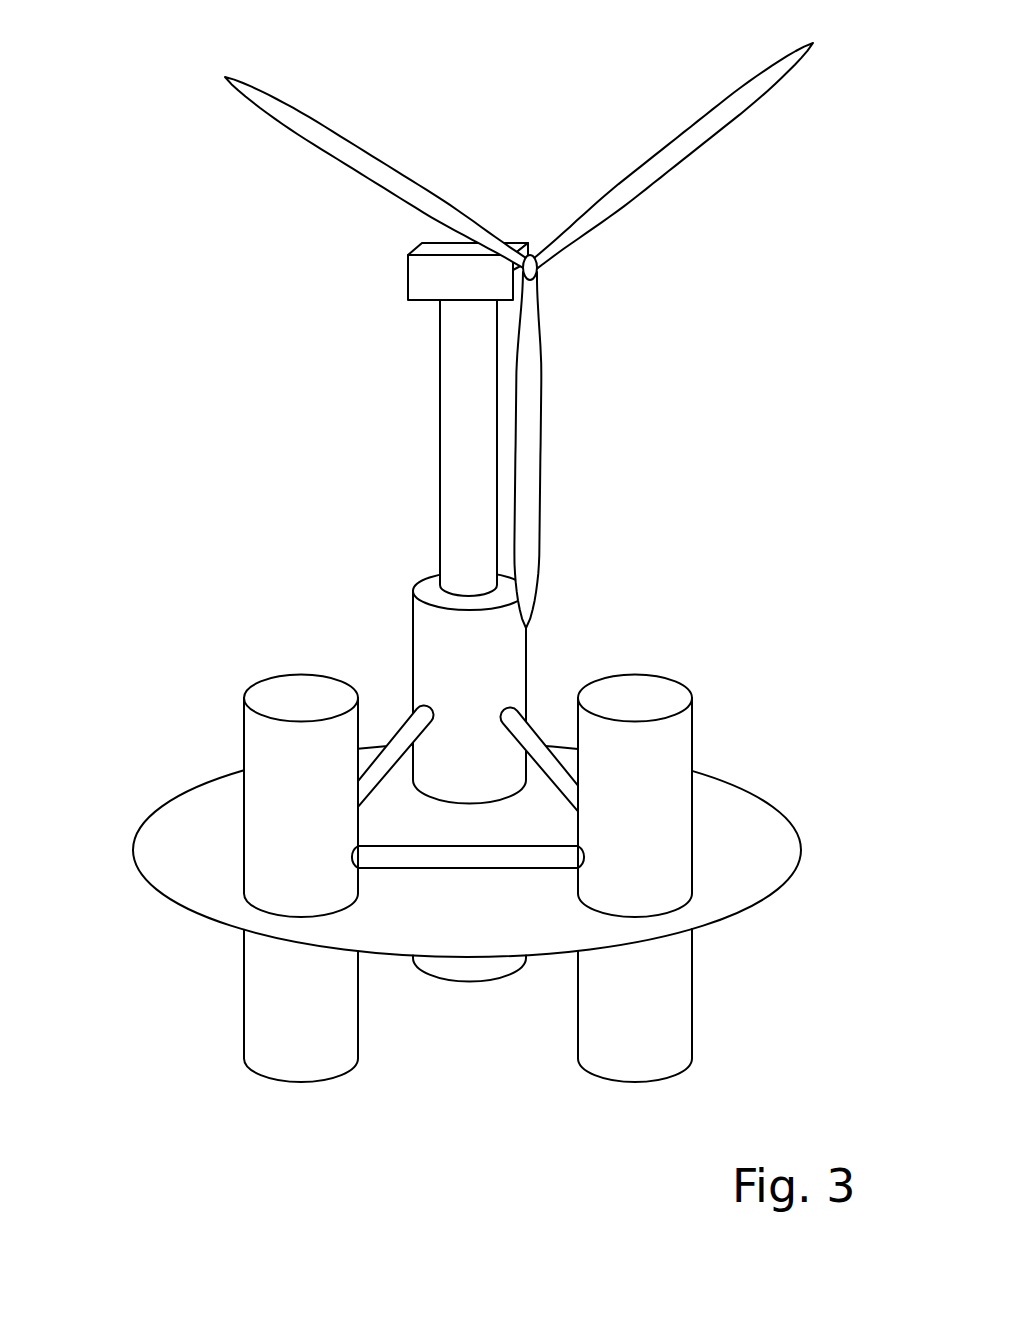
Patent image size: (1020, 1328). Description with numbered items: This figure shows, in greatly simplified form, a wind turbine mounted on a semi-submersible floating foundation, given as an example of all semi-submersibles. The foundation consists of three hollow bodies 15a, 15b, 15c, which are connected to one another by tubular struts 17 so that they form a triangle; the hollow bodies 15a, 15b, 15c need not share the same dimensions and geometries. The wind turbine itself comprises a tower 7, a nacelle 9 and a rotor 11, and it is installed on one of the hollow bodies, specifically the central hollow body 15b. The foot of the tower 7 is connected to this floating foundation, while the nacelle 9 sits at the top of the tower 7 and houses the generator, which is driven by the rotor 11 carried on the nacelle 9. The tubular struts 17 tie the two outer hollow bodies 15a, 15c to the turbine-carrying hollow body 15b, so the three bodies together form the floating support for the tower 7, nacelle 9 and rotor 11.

The tower 7 is at (457, 438).
The nacelle 9 is at (408, 267).
The rotor 11 is at (757, 175).
The hollow body 15a is at (648, 767).
The hollow body 15b is at (437, 646).
The hollow body 15c is at (272, 767).
The tubular struts 17 is at (401, 746).